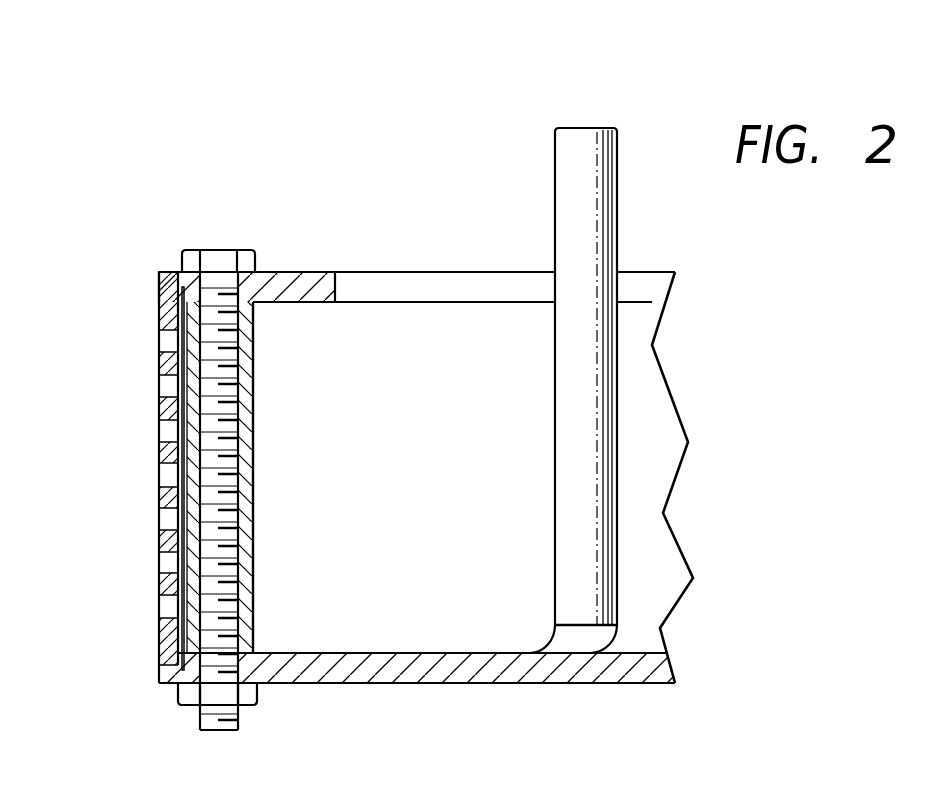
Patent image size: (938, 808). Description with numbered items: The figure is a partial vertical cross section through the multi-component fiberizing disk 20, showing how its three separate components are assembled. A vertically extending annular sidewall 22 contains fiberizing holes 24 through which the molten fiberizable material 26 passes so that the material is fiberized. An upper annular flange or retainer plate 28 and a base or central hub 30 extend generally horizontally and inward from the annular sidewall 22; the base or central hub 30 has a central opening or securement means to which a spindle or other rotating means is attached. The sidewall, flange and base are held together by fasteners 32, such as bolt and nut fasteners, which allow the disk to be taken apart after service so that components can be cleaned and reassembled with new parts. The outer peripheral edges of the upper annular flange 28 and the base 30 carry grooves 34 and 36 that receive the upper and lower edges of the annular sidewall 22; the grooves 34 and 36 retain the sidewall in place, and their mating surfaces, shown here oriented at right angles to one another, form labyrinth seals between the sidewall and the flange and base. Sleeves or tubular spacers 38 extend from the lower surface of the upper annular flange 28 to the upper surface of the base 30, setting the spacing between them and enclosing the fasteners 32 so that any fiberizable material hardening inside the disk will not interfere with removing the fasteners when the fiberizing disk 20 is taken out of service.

The multi-component fiberizing disk 20 is at (505, 123).
The annular sidewall 22 is at (158, 453).
The fiberizing holes 24 is at (157, 565).
The molten fiberizable material 26 is at (587, 187).
The upper annular flange or retainer plate 28 is at (320, 272).
The base or central hub 30 is at (482, 668).
The fasteners 32 is at (220, 250).
The groove 34 is at (162, 287).
The groove 36 is at (160, 670).
The sleeves or tubular spacers 38 is at (255, 553).